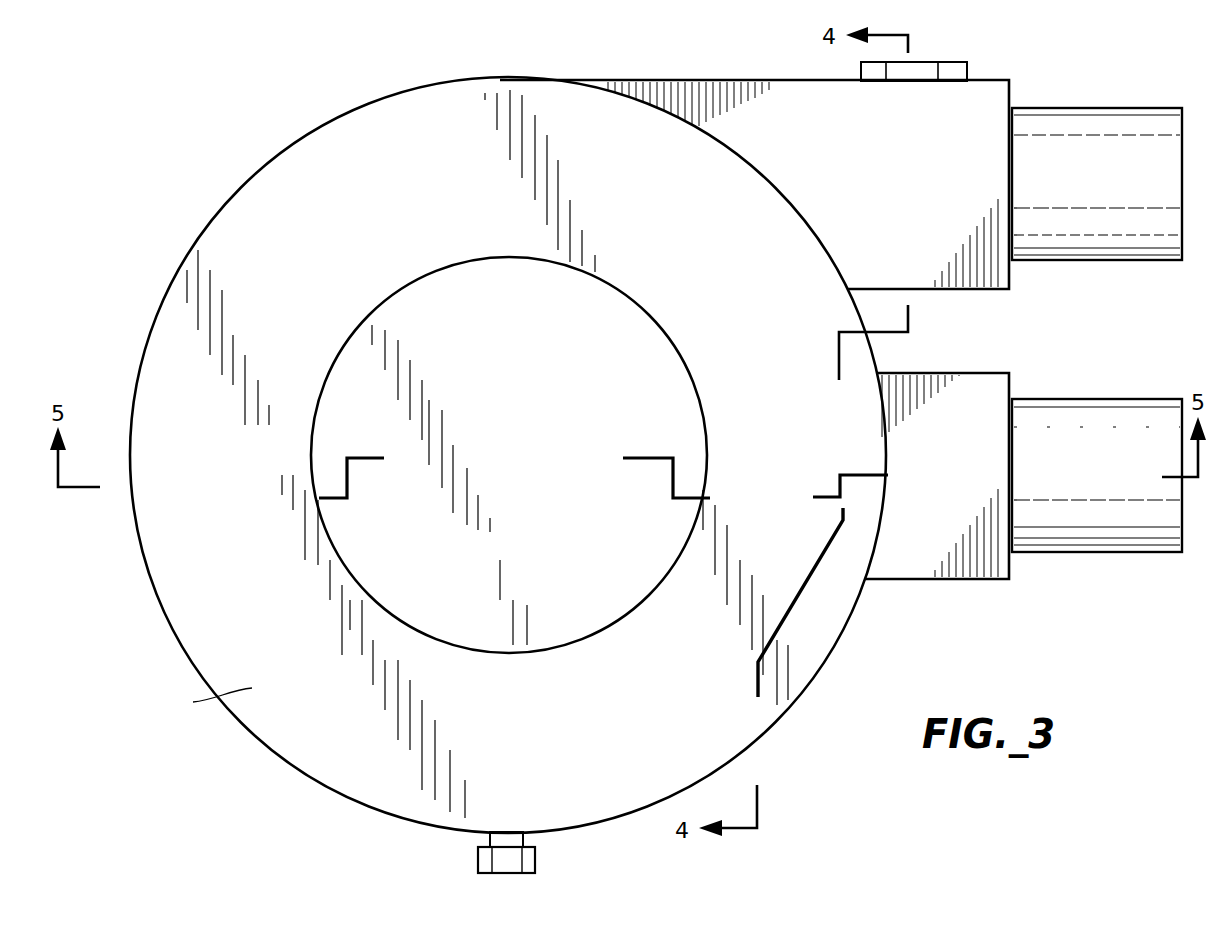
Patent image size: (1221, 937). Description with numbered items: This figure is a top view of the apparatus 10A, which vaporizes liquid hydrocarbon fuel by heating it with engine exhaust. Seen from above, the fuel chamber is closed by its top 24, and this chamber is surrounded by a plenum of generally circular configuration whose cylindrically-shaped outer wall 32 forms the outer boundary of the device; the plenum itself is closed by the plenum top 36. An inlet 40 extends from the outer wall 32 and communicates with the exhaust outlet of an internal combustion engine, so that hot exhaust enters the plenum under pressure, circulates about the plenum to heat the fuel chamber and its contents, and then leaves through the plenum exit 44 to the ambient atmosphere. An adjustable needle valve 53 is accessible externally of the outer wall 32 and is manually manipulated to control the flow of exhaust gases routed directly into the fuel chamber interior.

The apparatus 10A is at (280, 145).
The top 24 is at (503, 653).
The outer wall 32 is at (828, 660).
The plenum top 36 is at (204, 709).
The inlet 40 is at (1072, 242).
The plenum exit 44 is at (1110, 553).
The adjustable needle valve 53 is at (488, 838).